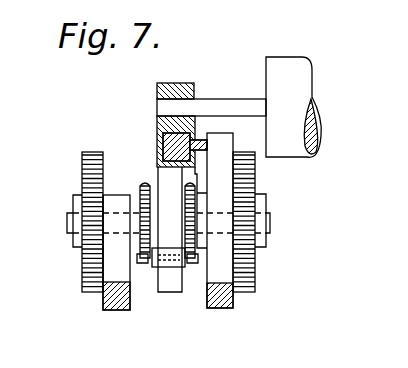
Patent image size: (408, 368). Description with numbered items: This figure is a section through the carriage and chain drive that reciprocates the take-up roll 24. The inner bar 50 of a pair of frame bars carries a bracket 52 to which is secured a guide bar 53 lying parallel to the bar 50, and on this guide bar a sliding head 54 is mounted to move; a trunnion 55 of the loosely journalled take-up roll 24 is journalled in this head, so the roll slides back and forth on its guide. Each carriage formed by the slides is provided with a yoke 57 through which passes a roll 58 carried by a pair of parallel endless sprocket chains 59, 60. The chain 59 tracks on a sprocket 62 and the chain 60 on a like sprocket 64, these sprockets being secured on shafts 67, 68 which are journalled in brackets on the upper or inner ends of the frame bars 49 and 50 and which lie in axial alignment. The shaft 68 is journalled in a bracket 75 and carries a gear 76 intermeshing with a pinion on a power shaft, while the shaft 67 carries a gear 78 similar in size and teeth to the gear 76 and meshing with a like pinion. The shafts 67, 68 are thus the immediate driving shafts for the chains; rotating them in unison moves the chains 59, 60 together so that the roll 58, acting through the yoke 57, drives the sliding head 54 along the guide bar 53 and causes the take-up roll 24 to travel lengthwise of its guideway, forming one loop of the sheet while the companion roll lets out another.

The take-up roll 24 is at (297, 155).
The frame bar 49 is at (116, 311).
The inner bar 50 is at (234, 306).
The bracket 52 is at (220, 153).
The guide bar 53 is at (163, 187).
The sliding head 54 is at (183, 82).
The trunnion 55 is at (224, 98).
The yoke 57 is at (142, 185).
The roll 58 is at (173, 267).
The sprocket chain 59 is at (197, 266).
The sprocket chain 60 is at (143, 266).
The sprocket 62 is at (199, 190).
The sprocket 64 is at (135, 187).
The shaft 67 is at (268, 221).
The shaft 68 is at (71, 224).
The bracket 75 is at (117, 252).
The gear 76 is at (81, 170).
The gear 78 is at (255, 270).